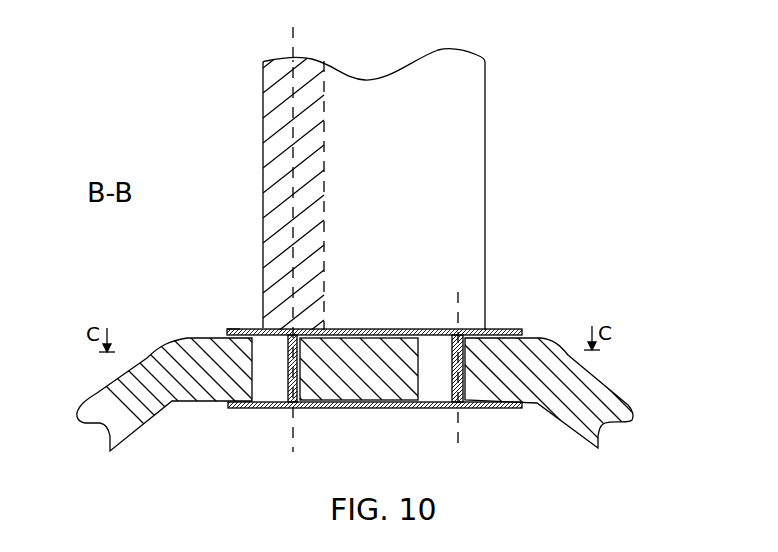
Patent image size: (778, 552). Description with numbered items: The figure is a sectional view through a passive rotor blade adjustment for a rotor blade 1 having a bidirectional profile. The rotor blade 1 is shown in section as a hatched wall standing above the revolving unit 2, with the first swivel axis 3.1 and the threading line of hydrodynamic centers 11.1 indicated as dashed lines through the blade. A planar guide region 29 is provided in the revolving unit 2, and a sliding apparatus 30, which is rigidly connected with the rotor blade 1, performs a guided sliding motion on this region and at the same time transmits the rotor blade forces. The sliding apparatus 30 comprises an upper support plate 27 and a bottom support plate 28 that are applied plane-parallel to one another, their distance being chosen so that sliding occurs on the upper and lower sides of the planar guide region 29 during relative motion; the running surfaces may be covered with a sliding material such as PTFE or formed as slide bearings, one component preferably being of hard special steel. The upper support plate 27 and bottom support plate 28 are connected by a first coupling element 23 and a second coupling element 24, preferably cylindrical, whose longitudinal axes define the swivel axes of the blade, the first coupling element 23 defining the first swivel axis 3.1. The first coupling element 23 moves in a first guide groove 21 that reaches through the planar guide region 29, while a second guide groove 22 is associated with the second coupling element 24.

The rotor blade 1 is at (263, 205).
The revolving unit 2 is at (155, 403).
The first swivel axis 3.1 is at (292, 118).
The threading line of hydrodynamic centers 11.1 is at (325, 183).
The first guide groove 21 is at (268, 392).
The second guide groove 22 is at (428, 397).
The first coupling element 23 is at (288, 408).
The second coupling element 24 is at (483, 408).
The upper support plate 27 is at (227, 330).
The bottom support plate 28 is at (320, 408).
The planar guide region 29 is at (477, 347).
The sliding apparatus 30 is at (262, 326).